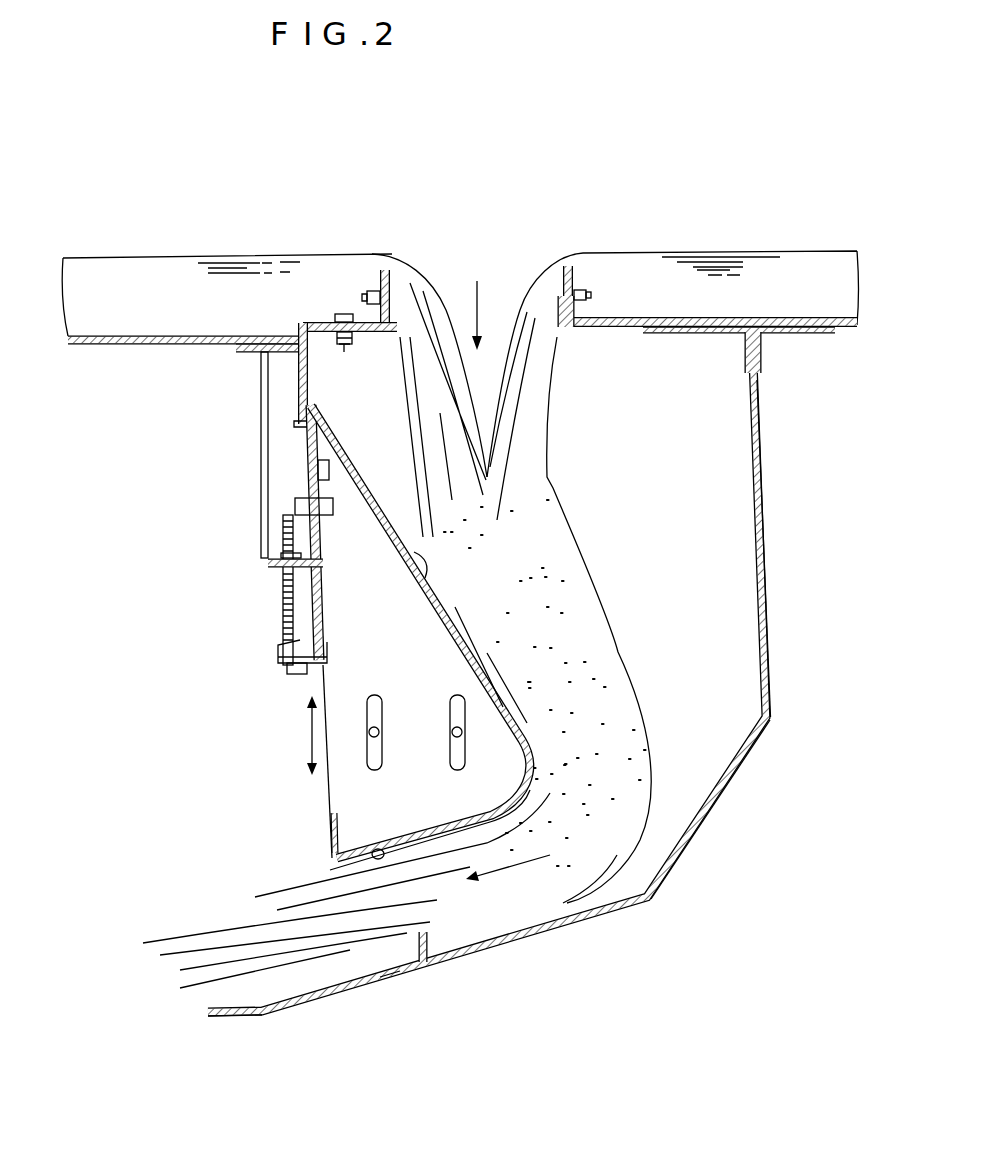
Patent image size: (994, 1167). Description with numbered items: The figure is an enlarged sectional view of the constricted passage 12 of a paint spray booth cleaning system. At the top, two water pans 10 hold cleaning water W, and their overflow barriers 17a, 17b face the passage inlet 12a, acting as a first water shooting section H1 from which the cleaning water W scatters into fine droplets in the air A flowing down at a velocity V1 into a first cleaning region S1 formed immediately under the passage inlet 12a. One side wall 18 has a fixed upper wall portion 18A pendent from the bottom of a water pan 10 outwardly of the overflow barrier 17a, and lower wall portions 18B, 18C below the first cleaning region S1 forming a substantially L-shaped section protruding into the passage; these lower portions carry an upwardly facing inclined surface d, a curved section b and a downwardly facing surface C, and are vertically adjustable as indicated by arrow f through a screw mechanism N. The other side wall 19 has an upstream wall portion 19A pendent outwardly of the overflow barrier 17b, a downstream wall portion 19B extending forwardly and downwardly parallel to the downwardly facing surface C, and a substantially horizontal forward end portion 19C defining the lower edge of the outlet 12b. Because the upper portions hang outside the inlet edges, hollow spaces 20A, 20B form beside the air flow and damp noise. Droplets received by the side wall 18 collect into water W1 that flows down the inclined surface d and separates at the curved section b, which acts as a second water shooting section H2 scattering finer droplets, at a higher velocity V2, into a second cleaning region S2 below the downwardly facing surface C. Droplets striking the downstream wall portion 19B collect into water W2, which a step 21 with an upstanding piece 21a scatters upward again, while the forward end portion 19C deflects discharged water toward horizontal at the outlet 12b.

The water pan 10 is at (107, 335).
The constricted passage 12 is at (640, 565).
The passage inlet 12a is at (498, 318).
The outlet 12b is at (250, 902).
The overflow barrier 17a is at (380, 282).
The overflow barrier 17b is at (573, 280).
The side wall 18 is at (291, 611).
The upper wall portion 18A is at (296, 380).
The lower wall portion 18B is at (452, 630).
The lower wall portion 18C is at (437, 827).
The side wall 19 is at (523, 672).
The upstream wall portion 19A is at (757, 413).
The downstream wall portion 19B is at (645, 900).
The forward end portion 19C is at (252, 1020).
The hollow space 20A is at (338, 390).
The hollow space 20B is at (660, 403).
The step 21 is at (437, 963).
The upstanding piece 21a is at (381, 975).
The screw mechanism N is at (276, 603).
The upwardly facing inclined surface d is at (412, 557).
The arrow f is at (300, 735).
The downwardly facing surface C is at (366, 848).
The curved section b is at (537, 767).
The air A is at (472, 303).
The velocity V1 is at (446, 186).
The velocity V2 is at (518, 865).
The cleaning water W is at (757, 260).
The water W1 is at (497, 670).
The water W2 is at (565, 900).
The first cleaning region S1 is at (485, 477).
The second cleaning region S2 is at (473, 893).
The first water shooting section H1 is at (382, 250).
The second water shooting section H2 is at (550, 786).